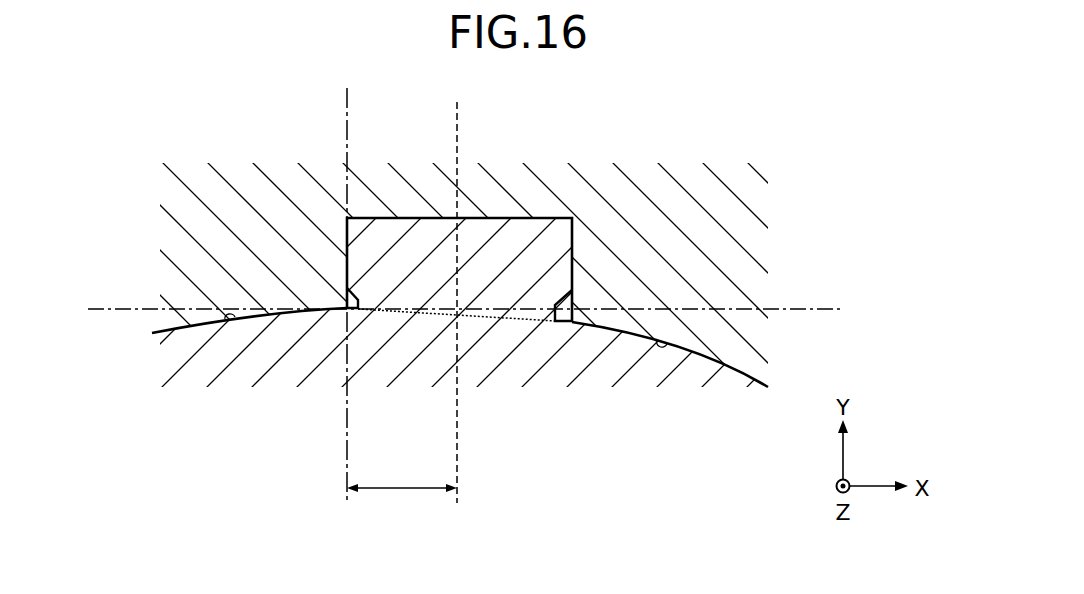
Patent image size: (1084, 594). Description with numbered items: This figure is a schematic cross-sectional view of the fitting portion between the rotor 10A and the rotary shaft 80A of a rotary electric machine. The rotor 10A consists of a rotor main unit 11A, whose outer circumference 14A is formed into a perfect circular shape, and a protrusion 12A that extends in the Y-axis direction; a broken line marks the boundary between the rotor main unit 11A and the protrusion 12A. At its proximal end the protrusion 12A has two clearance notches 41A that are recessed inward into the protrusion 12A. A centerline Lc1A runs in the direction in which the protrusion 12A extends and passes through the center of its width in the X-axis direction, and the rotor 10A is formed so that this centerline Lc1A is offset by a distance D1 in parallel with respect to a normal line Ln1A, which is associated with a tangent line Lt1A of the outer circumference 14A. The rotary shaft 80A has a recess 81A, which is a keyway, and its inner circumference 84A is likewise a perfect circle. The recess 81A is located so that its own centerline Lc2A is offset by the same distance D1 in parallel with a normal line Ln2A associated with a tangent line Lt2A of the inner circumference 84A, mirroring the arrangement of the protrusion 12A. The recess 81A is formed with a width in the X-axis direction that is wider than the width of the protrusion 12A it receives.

The rotor 10A is at (209, 447).
The rotor main unit 11A is at (627, 360).
The protrusion 12A is at (492, 273).
The outer circumference 14A is at (222, 322).
The clearance notch 41A is at (315, 312).
The rotary shaft 80A is at (208, 178).
The recess 81A is at (385, 236).
The inner circumference 84A is at (662, 343).
The tangent line Lt1A is at (119, 307).
The tangent line Lt2A is at (816, 307).
The normal line Ln1A is at (347, 466).
The normal line Ln2A is at (347, 108).
The centerline Lc1A is at (457, 466).
The centerline Lc2A is at (457, 128).
The distance D1 is at (402, 499).